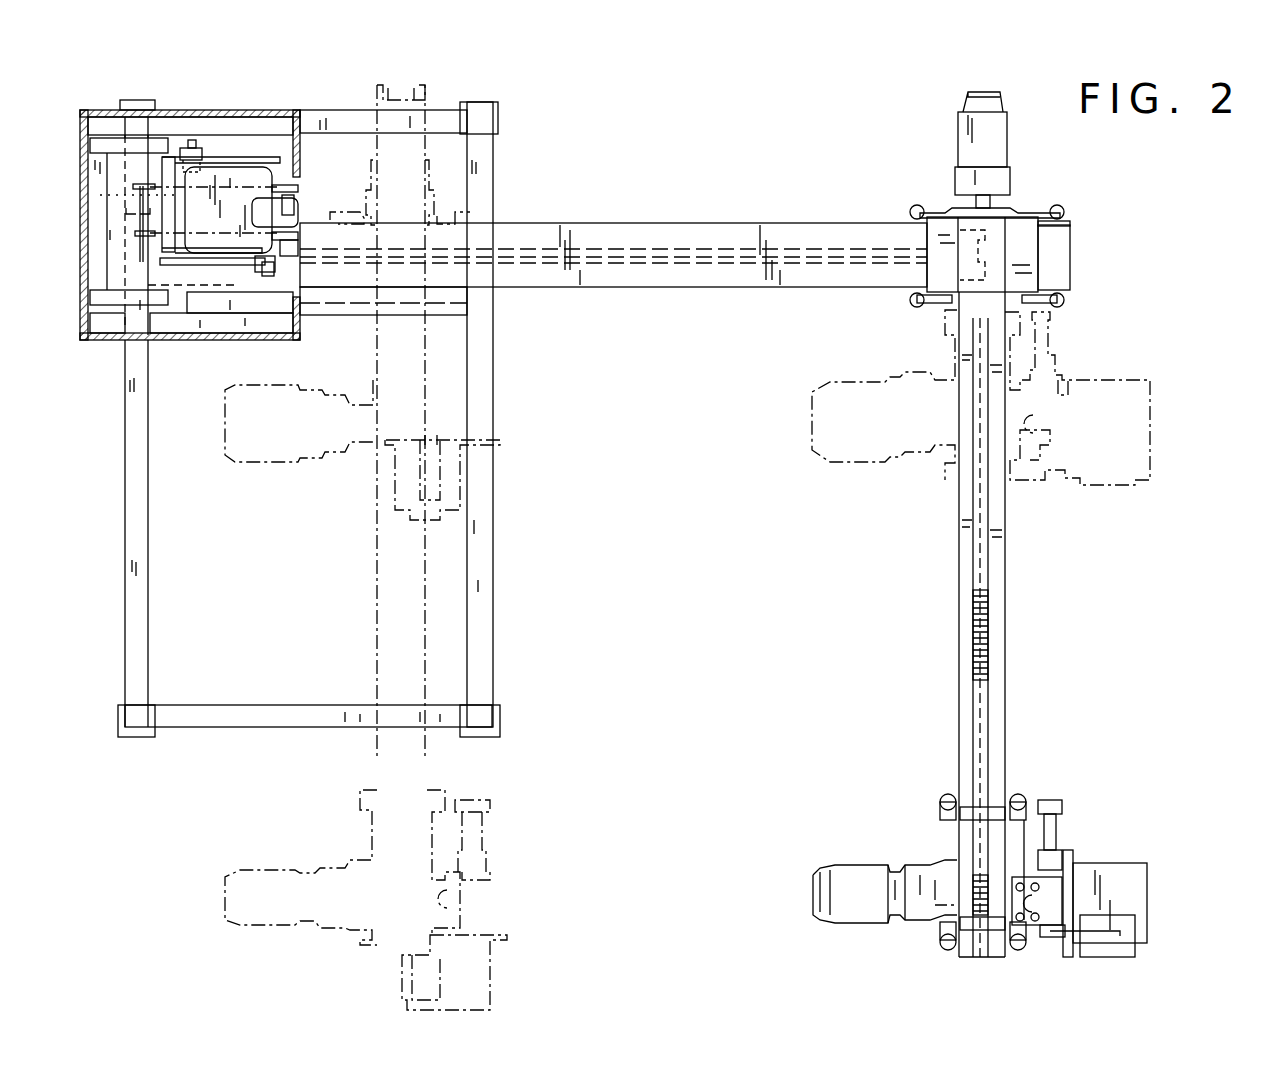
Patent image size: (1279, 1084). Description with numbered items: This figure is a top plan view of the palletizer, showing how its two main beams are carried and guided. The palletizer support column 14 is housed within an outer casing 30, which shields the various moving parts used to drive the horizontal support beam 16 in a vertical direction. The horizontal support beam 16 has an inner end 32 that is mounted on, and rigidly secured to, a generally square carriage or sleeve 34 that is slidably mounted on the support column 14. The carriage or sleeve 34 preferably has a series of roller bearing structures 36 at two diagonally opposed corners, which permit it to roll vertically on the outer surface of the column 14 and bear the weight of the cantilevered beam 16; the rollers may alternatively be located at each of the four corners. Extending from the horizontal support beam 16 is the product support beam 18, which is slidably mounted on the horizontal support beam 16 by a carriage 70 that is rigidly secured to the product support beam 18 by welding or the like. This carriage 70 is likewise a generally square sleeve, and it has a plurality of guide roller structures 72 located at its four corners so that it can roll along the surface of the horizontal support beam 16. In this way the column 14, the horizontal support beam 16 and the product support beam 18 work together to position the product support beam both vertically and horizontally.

The palletizer support column 14 is at (232, 160).
The horizontal support beam 16 is at (535, 225).
The product support beam 18 is at (1003, 680).
The outer casing 30 is at (83, 110).
The inner end 32 is at (315, 230).
The carriage or sleeve 34 is at (250, 178).
The roller bearing structures 36 is at (176, 128).
The carriage 70 is at (1025, 230).
The guide roller structures 72 is at (908, 210).